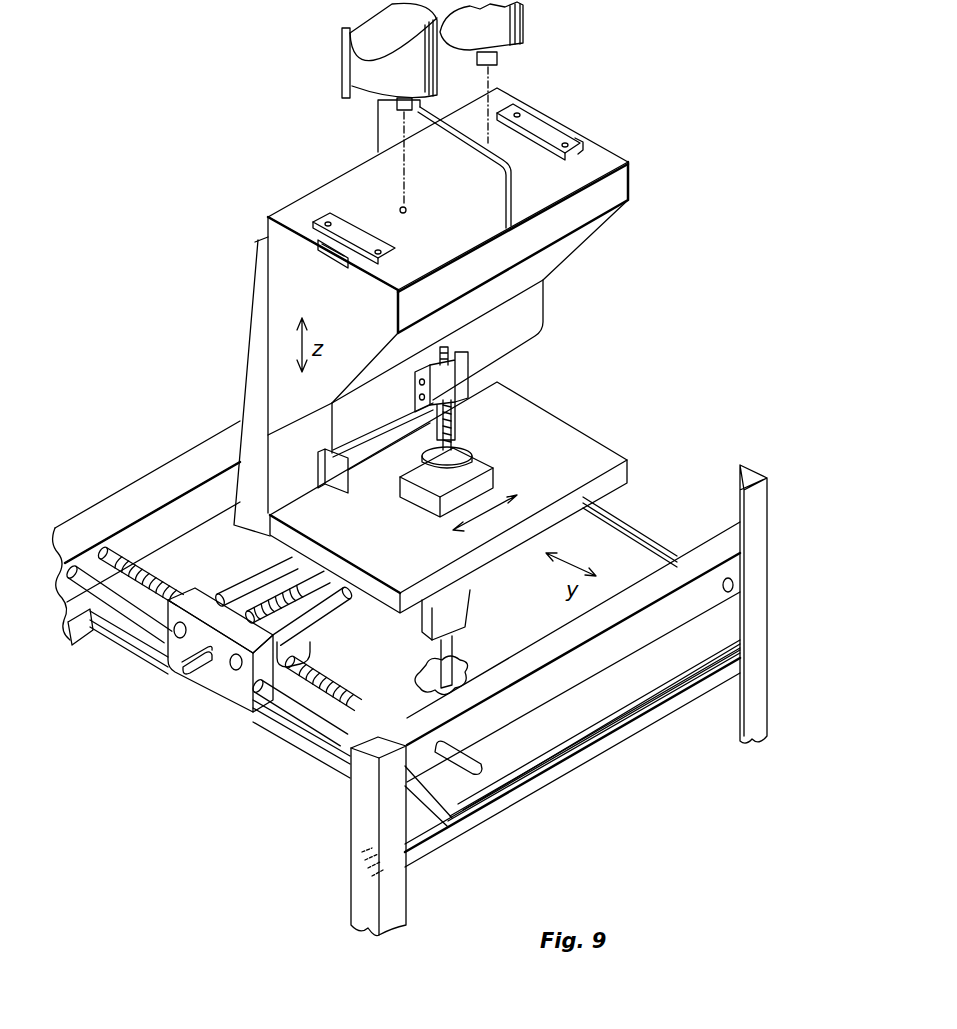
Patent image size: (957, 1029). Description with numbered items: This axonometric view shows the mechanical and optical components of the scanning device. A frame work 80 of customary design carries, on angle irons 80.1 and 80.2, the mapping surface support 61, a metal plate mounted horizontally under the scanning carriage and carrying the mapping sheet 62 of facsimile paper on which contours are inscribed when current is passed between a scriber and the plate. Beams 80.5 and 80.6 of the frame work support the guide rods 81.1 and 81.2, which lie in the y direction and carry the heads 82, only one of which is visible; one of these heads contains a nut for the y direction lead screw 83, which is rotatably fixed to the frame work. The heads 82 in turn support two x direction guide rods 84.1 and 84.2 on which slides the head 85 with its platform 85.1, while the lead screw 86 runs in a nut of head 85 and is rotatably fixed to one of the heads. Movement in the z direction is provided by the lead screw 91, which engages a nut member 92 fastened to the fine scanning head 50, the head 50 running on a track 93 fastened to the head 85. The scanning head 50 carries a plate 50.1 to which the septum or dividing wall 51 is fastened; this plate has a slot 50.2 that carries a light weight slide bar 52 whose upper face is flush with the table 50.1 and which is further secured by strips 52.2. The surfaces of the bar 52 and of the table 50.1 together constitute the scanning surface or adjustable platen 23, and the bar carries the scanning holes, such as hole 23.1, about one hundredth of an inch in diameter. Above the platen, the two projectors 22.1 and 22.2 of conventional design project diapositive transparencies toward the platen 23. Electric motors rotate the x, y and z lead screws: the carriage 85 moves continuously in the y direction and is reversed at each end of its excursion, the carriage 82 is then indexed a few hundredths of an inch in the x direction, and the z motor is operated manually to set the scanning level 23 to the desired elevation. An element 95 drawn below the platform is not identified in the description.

The projector 22.1 is at (360, 64).
The projector 22.2 is at (523, 30).
The adjustable platen 23 is at (598, 163).
The scanning hole 23.1 is at (398, 207).
The fine scanning head 50 is at (588, 249).
The plate 50.1 is at (618, 170).
The slot 50.2 is at (545, 117).
The septum or dividing wall 51 is at (377, 133).
The slide bar 52 is at (431, 201).
The strips 52.2 is at (523, 117).
The mapping surface support 61 is at (605, 730).
The mapping sheet 62 is at (556, 740).
The frame work 80 is at (352, 876).
The angle iron 80.1 is at (485, 812).
The angle iron 80.2 is at (83, 640).
The beam 80.5 is at (704, 546).
The beam 80.6 is at (153, 482).
The guide rod 81.1 is at (300, 710).
The guide rod 81.2 is at (617, 520).
The head 82 is at (203, 697).
The y direction lead screw 83 is at (317, 730).
The x direction guide rod 84.1 is at (312, 636).
The x direction guide rod 84.2 is at (275, 573).
The head 85 is at (245, 352).
The platform 85.1 is at (553, 437).
The lead screw 86 is at (197, 663).
The lead screw 91 is at (454, 438).
The nut member 92 is at (458, 386).
The track 93 is at (340, 490).
The nozzle 95 is at (470, 655).